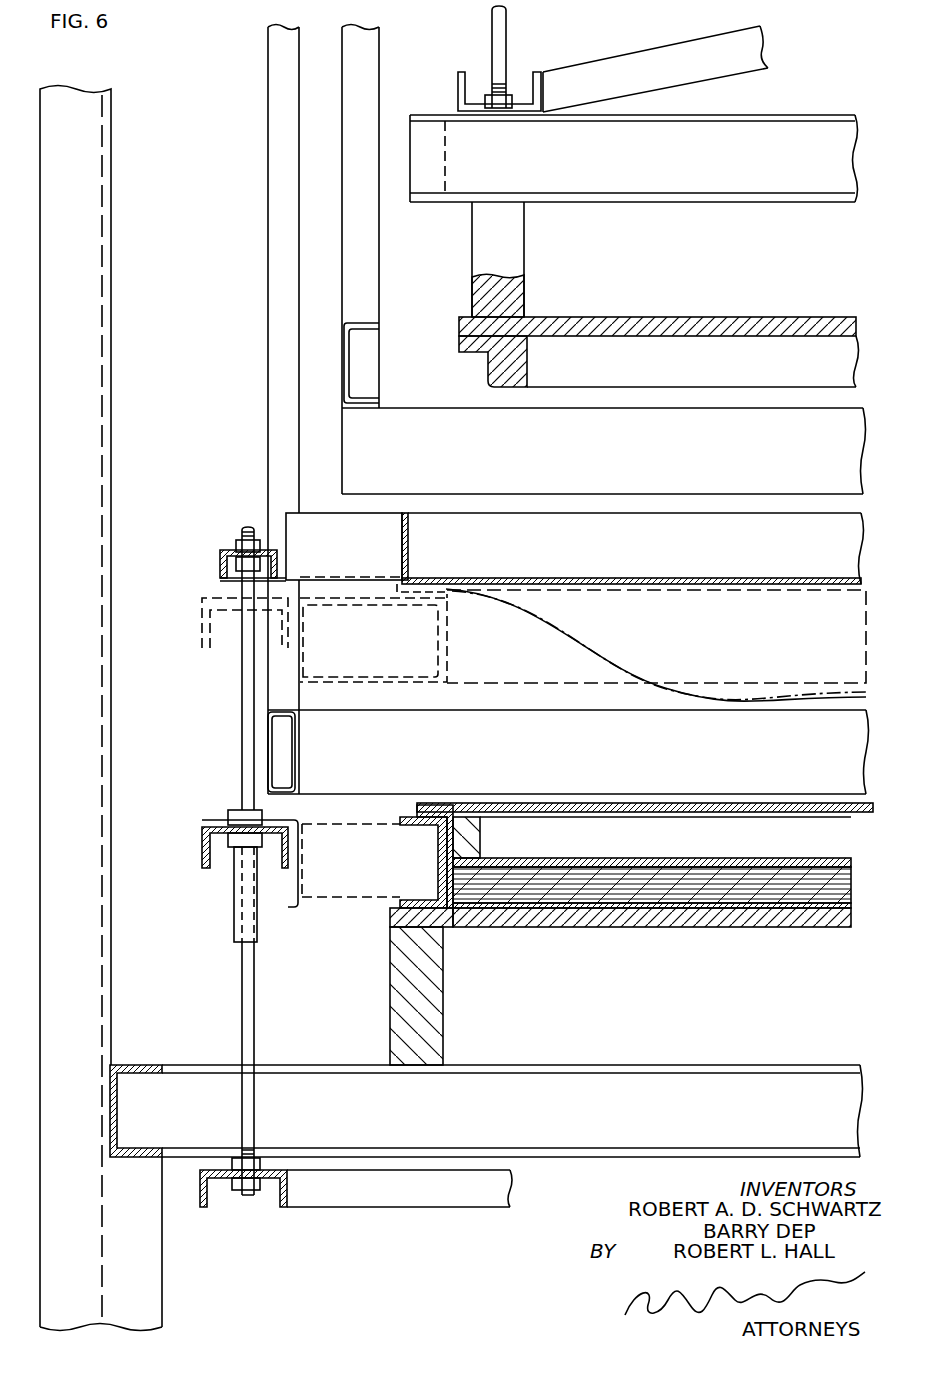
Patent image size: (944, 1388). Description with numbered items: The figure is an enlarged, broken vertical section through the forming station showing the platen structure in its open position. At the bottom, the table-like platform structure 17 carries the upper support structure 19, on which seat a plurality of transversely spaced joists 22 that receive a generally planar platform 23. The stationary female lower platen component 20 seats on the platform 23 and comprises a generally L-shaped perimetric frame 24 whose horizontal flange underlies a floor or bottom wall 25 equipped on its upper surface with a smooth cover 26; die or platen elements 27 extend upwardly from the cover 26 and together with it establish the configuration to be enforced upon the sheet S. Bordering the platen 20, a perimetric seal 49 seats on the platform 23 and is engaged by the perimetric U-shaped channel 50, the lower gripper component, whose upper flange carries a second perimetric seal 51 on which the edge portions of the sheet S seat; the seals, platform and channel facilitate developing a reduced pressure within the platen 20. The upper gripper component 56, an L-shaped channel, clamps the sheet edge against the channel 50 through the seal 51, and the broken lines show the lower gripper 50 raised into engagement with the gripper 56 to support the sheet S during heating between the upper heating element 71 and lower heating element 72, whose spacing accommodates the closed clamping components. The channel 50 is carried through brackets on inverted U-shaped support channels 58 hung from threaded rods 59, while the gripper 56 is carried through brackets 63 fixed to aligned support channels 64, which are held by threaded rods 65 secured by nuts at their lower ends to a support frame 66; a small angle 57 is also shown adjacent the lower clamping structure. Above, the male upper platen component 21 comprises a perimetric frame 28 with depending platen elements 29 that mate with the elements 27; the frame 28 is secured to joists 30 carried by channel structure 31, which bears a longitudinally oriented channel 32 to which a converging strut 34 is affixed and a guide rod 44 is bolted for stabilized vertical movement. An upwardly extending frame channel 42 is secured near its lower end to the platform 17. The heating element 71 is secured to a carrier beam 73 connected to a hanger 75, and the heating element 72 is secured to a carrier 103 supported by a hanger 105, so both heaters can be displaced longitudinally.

The table-like platform structure 17 is at (108, 1068).
The upper support structure 19 is at (662, 1066).
The lower platen component 20 is at (605, 812).
The upper platen component 21 is at (666, 389).
The joists 22 is at (440, 1040).
The platform 23 is at (612, 924).
The perimetric frame 24 is at (475, 906).
The floor or bottom wall 25 is at (710, 893).
The cover 26 is at (731, 860).
The die or platen elements 27 is at (482, 824).
The perimetric frame 28 is at (601, 318).
The depending platen elements 29 is at (541, 383).
The joists 30 is at (521, 300).
The channel structure 31 is at (412, 116).
The longitudinally oriented channel 32 is at (458, 76).
The strut or truss member 34 is at (592, 66).
The upwardly extending channel 42 is at (111, 420).
The guide rod 44 is at (492, 44).
The perimetric seal 49 is at (425, 908).
The U-shaped channel 50 is at (448, 656).
The perimetric seal 51 is at (449, 598).
The upper gripper component 56 is at (410, 546).
The angle bracket 57 is at (289, 909).
The support channels 58 is at (202, 646).
The rods 59 is at (234, 912).
The brackets 63 is at (286, 514).
The support channels 64 is at (220, 552).
The rods 65 is at (242, 726).
The support frame 66 is at (273, 1208).
The upper heating element 71 is at (353, 432).
The lower heating element 72 is at (310, 751).
The carrier beam 73 is at (346, 324).
The hanger 75 is at (380, 290).
The carrier 103 is at (270, 712).
The hanger 105 is at (268, 421).
The sheet S is at (655, 594).